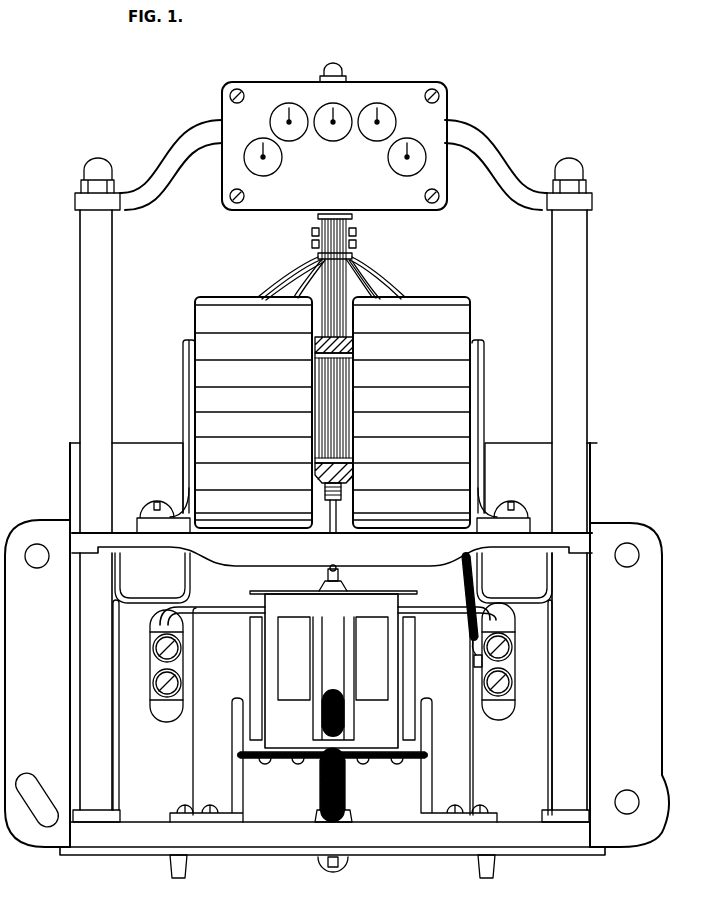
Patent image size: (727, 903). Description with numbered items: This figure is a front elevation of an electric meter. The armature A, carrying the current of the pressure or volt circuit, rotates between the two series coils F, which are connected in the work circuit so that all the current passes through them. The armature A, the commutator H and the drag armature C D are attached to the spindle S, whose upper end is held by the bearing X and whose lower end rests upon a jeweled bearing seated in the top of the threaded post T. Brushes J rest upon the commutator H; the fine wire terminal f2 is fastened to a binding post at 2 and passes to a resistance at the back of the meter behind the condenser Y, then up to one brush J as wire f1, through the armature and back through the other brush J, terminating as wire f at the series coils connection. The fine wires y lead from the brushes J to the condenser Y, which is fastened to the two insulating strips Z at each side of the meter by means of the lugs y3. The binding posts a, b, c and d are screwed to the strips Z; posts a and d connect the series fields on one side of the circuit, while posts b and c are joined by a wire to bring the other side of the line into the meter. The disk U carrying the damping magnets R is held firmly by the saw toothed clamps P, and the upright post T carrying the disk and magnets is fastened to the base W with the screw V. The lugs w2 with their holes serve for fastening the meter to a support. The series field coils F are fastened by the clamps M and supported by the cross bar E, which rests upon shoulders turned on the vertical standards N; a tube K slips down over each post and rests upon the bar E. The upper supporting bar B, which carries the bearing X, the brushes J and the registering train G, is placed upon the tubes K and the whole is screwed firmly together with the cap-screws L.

The bearing X is at (340, 66).
The registering train G is at (334, 146).
The upper supporting bar B is at (333, 165).
The cap-screws L is at (100, 170).
The tube K is at (333, 363).
The commutator H is at (322, 224).
The brushes J is at (356, 244).
The fine wires y is at (318, 269).
The fine wire terminal f is at (315, 262).
The fine wire f1 is at (382, 274).
The series coils F is at (333, 412).
The armature A is at (340, 402).
The spindle S is at (328, 533).
The insulating strips Z is at (333, 629).
The lugs y3 is at (487, 503).
The clamps M is at (510, 515).
The cross bar E is at (332, 549).
The condenser Y is at (333, 578).
The drag armature D is at (257, 590).
The fine wire terminal f2 is at (463, 585).
The fastening point 2 is at (474, 664).
The drag armature C is at (331, 671).
The magnets R is at (415, 647).
The binding post b is at (172, 715).
The binding post c is at (495, 714).
The binding post a is at (115, 688).
The binding post d is at (548, 697).
The disk U is at (284, 760).
The threaded post T is at (352, 785).
The saw toothed clamps P is at (421, 786).
The base W is at (332, 850).
The screw V is at (346, 860).
The vertical standards N is at (331, 687).
The lugs w2 is at (337, 645).